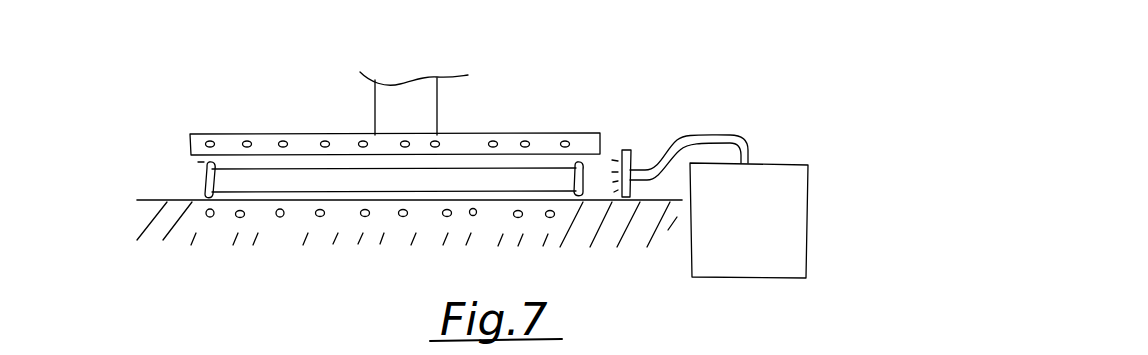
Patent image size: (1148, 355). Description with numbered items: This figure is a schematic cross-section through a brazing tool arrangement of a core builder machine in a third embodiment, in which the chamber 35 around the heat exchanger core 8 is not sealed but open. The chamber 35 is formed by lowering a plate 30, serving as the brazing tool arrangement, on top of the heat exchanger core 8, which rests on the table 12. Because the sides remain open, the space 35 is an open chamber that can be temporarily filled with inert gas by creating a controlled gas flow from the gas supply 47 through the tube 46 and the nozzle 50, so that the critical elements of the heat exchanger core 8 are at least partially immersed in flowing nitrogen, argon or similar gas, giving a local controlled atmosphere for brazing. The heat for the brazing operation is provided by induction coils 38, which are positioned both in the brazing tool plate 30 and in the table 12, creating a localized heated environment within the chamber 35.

The heat exchanger core 8 is at (488, 182).
The table 12 is at (138, 220).
The plate 30 is at (240, 134).
The chamber 35 is at (198, 163).
The induction coils 38 is at (327, 135).
The tube 46 is at (720, 135).
The gas supply 47 is at (749, 220).
The nozzle 50 is at (628, 150).